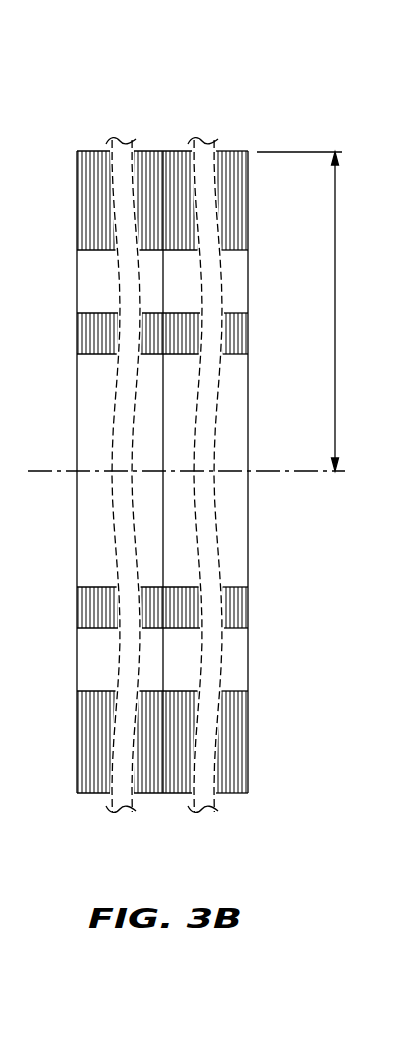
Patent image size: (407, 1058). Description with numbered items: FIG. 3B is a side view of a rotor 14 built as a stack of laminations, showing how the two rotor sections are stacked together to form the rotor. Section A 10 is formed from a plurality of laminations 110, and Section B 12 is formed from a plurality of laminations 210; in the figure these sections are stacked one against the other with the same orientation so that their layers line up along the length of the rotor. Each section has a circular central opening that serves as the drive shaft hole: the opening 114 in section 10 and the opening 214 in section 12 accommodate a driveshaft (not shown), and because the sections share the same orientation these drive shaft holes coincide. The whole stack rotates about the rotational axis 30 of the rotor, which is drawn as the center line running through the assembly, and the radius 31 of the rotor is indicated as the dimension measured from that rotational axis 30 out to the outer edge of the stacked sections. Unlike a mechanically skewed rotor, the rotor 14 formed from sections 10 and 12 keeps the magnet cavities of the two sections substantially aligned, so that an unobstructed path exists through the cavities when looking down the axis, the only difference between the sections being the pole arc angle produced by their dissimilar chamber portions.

The rotor 14 is at (257, 78).
The Section A 10 is at (59, 489).
The Section B 12 is at (279, 492).
The lamination 110 is at (74, 160).
The lamination 210 is at (238, 172).
The circular central opening 114 is at (100, 356).
The circular central opening 214 is at (227, 356).
The rotational axis 30 is at (310, 472).
The radius 31 is at (336, 310).